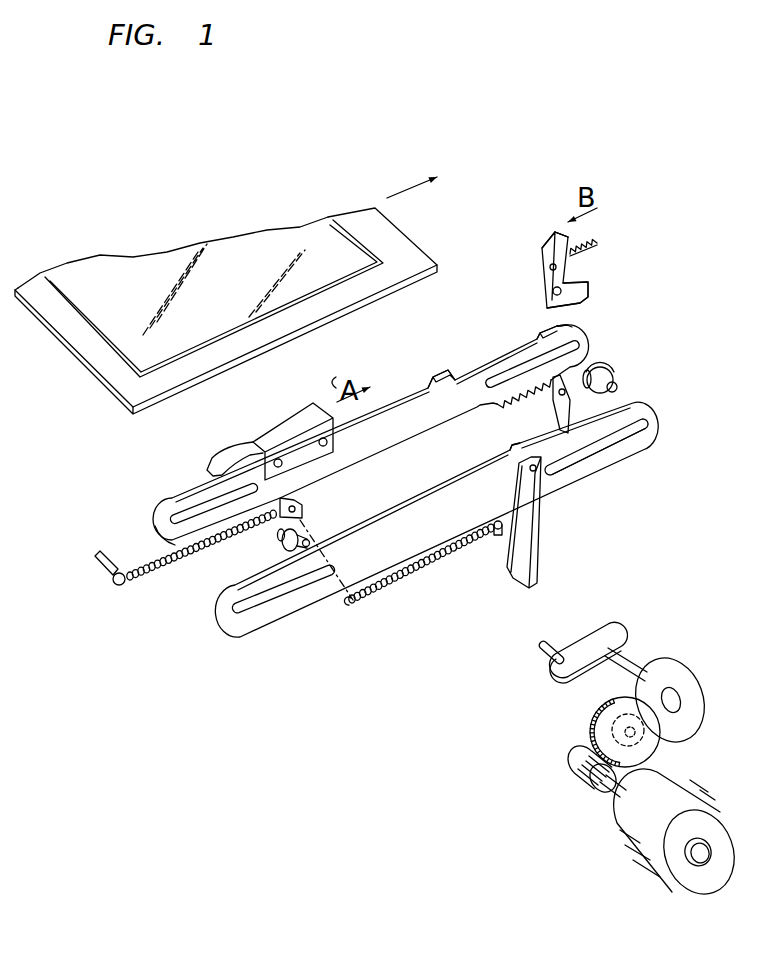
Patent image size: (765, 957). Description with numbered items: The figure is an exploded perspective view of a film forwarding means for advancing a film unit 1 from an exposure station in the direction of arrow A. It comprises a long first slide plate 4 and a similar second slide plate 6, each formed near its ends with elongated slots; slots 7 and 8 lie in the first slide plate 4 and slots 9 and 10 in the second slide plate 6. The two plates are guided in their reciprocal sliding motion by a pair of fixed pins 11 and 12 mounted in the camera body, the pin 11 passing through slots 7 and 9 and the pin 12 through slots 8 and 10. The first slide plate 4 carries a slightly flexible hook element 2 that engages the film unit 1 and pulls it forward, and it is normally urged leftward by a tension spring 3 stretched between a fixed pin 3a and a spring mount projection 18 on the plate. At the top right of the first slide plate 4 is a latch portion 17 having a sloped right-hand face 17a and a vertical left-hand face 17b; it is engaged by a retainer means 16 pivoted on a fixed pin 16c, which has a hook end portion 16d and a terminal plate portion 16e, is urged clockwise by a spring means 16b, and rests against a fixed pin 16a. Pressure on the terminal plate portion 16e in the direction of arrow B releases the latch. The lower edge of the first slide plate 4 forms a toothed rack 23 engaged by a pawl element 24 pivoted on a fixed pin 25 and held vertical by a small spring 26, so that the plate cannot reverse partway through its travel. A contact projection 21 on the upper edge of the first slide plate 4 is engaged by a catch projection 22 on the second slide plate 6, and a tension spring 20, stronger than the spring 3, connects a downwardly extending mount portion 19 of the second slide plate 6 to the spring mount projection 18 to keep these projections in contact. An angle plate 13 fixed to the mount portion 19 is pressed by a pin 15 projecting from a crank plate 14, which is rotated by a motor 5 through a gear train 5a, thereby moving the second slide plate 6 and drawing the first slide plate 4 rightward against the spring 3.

The film unit 1 is at (357, 218).
The hook element 2 is at (283, 428).
The tension spring 3 is at (192, 548).
The fixed pin 3a is at (103, 577).
The first slide plate 4 is at (388, 416).
The motor 5 is at (633, 823).
The gear train 5a is at (610, 727).
The second slide plate 6 is at (388, 533).
The elliptical slot 7 is at (188, 513).
The elliptical slot 8 is at (513, 370).
The slot 9 is at (277, 593).
The slot 10 is at (597, 465).
The pin 11 is at (278, 537).
The pin 12 is at (617, 377).
The angle plate 13 is at (528, 530).
The crank plate 14 is at (580, 648).
The pin 15 is at (543, 648).
The retainer means 16 is at (577, 283).
The fixed pin 16a is at (570, 252).
The spring means 16b is at (593, 258).
The fixed pin 16c is at (547, 287).
The hook end portion 16d is at (587, 298).
The terminal plate portion 16e is at (565, 230).
The latch portion 17 is at (545, 320).
The right-hand face 17a is at (563, 322).
The left-hand face 17b is at (540, 330).
The spring mount projection 18 is at (302, 510).
The mount portion 19 is at (497, 537).
The tension spring 20 is at (400, 583).
The contact projection 21 is at (443, 367).
The catch projection 22 is at (513, 450).
The toothed rack 23 is at (493, 408).
The pawl element 24 is at (600, 363).
The fixed pin 25 is at (567, 423).
The spring 26 is at (583, 460).